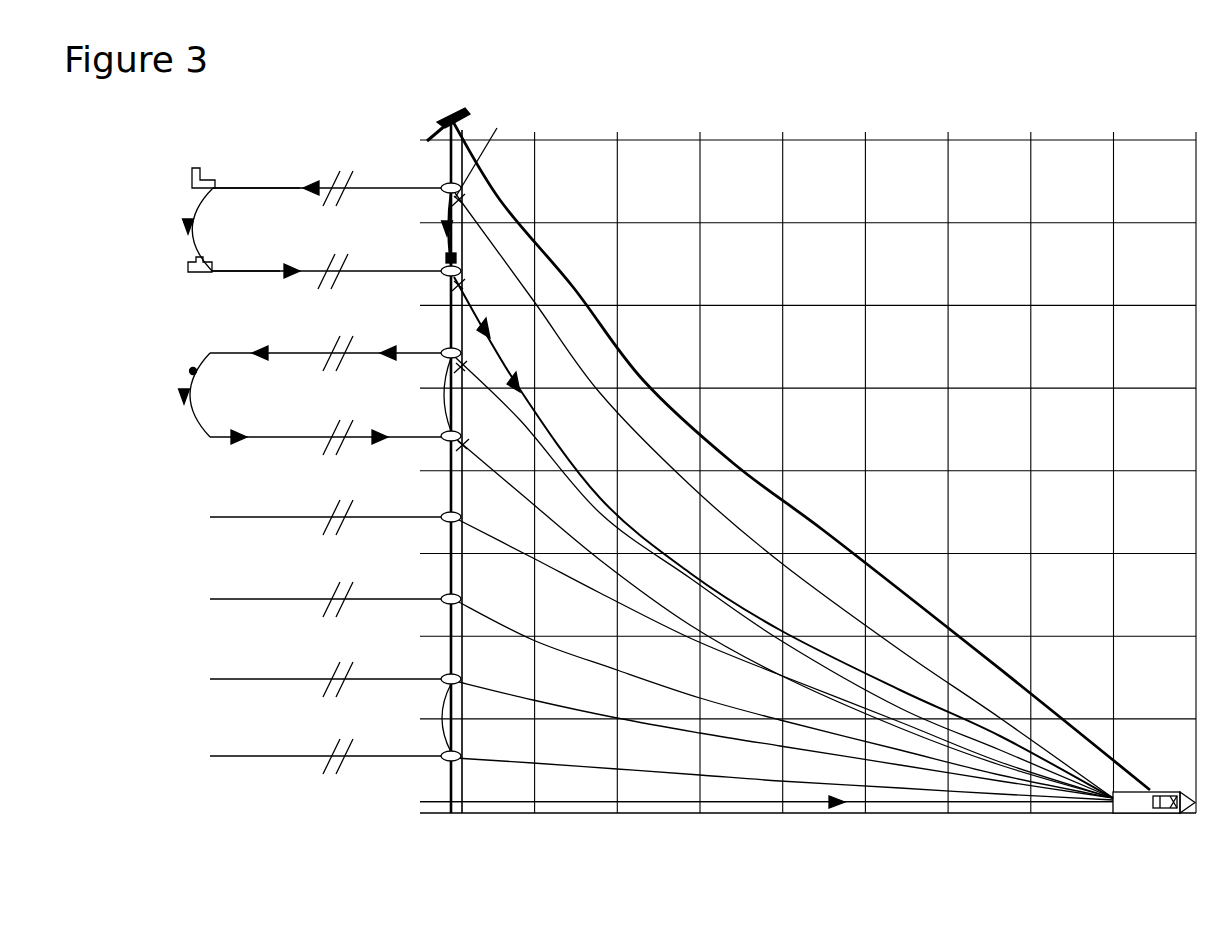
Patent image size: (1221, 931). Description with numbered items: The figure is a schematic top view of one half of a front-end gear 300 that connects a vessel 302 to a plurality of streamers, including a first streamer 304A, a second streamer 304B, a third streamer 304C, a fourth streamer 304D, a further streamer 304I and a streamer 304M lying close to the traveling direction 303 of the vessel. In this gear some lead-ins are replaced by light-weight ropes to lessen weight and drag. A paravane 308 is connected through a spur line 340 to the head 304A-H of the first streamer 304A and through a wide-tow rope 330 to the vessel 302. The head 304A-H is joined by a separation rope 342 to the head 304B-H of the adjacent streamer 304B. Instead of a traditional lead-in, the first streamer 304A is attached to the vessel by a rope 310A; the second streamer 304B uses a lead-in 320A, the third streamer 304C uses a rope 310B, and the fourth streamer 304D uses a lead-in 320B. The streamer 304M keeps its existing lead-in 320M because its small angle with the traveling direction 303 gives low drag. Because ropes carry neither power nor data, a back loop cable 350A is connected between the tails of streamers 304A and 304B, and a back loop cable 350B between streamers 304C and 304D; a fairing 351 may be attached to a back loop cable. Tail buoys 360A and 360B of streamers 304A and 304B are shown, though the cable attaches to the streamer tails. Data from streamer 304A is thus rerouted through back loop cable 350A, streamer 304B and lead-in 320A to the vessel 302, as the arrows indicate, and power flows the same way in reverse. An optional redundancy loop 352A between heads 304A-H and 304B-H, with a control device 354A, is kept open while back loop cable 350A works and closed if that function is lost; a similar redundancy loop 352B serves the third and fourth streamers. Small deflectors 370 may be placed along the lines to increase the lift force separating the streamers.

The front-end gear 300 is at (682, 184).
The vessel 302 is at (1140, 815).
The traveling direction 303 is at (735, 815).
The first streamer 304A is at (257, 188).
The second streamer 304B is at (240, 271).
The third streamer 304C is at (228, 353).
The fourth streamer 304D is at (262, 437).
The streamer 304I is at (272, 519).
The streamer 304M is at (402, 757).
The head of first streamer 304A-H is at (434, 185).
The head of second streamer 304B-H is at (448, 285).
The paravane 308 is at (440, 128).
The rope 310A is at (555, 325).
The rope 310B is at (695, 555).
The lead-in 320A is at (545, 405).
The lead-in 320B is at (520, 478).
The lead-in 320M is at (540, 763).
The wide-tow rope 330 is at (578, 282).
The spur line 340 is at (447, 178).
The separation rope 342 is at (443, 231).
The back loop cable 350A is at (186, 214).
The back loop cable 350B is at (186, 405).
The fairing 351 is at (190, 370).
The redundancy loop 352A is at (455, 201).
The redundancy loop 352B is at (445, 395).
The control device 354A is at (446, 261).
The tail buoy 360A is at (197, 168).
The tail buoy 360B is at (199, 272).
The small deflector 370 is at (480, 270).